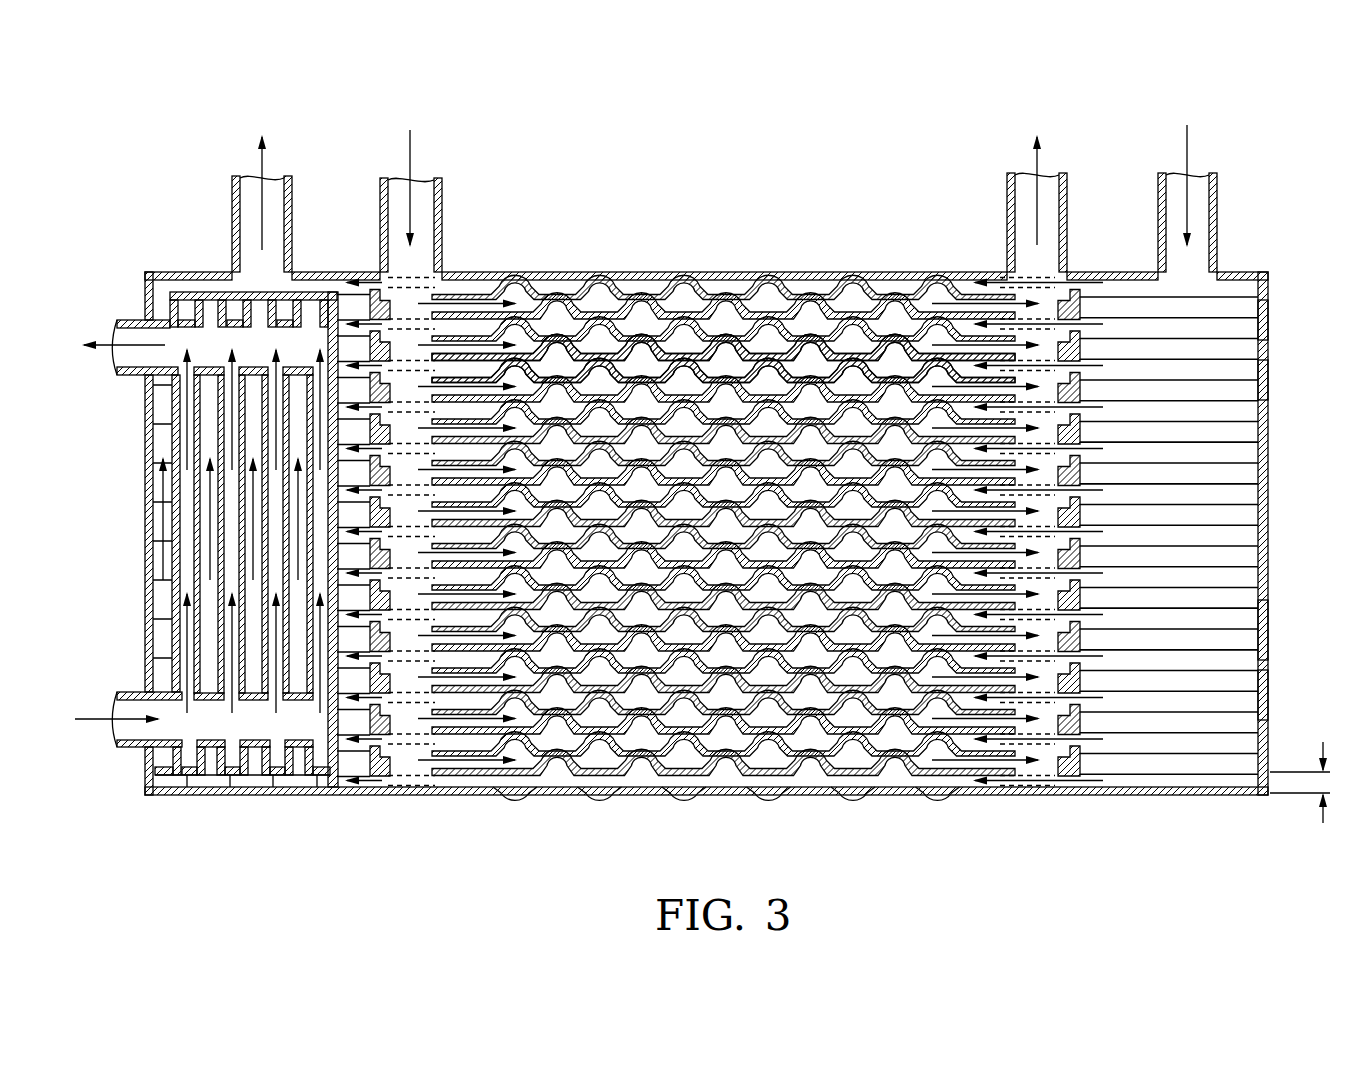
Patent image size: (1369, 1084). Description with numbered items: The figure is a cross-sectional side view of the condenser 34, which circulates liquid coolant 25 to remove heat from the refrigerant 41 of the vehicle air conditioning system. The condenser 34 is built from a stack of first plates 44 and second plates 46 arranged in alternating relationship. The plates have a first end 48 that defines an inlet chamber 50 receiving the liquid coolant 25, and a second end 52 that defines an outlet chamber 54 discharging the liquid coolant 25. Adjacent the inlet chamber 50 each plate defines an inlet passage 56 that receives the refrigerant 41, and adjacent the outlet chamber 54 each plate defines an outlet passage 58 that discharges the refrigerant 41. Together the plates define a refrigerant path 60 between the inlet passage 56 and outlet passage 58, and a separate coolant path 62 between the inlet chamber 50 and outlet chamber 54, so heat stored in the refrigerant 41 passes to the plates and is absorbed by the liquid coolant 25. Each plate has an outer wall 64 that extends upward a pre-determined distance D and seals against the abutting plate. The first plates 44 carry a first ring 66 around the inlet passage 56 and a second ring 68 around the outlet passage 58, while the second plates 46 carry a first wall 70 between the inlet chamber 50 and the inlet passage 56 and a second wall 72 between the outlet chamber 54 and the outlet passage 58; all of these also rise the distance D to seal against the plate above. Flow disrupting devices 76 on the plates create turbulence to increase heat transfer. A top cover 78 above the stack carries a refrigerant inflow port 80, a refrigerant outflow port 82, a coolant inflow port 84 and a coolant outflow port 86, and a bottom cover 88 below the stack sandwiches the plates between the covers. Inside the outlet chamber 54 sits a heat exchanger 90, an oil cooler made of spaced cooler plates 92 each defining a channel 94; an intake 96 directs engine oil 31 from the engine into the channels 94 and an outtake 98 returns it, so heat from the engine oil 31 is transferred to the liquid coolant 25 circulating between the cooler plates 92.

The condenser 34 is at (1322, 171).
The liquid coolant 25 is at (258, 160).
The refrigerant 41 is at (406, 158).
The engine oil 31 is at (80, 343).
The first plates 44 is at (1268, 318).
The second plates 46 is at (1268, 380).
The first end 48 is at (1268, 492).
The inlet chamber 50 is at (1268, 530).
The second end 52 is at (147, 462).
The outlet chamber 54 is at (160, 592).
The inlet passage 56 is at (1040, 295).
The outlet passage 58 is at (405, 300).
The refrigerant path 60 is at (633, 372).
The coolant path 62 is at (765, 292).
The outer wall 64 is at (148, 540).
The first ring 66 is at (1082, 485).
The second ring 68 is at (596, 395).
The first wall 70 is at (1082, 643).
The second wall 72 is at (345, 670).
The flow disrupting devices 76 is at (705, 762).
The top cover 78 is at (522, 300).
The refrigerant inflow port 80 is at (1008, 205).
The refrigerant outflow port 82 is at (442, 195).
The coolant inflow port 84 is at (1219, 248).
The coolant outflow port 86 is at (232, 215).
The bottom cover 88 is at (745, 797).
The heat exchanger 90 is at (172, 668).
The cooler plates 92 is at (187, 790).
The channel 94 is at (228, 527).
The intake 96 is at (127, 750).
The outtake 98 is at (137, 313).
The pre-determined distance D is at (1322, 797).